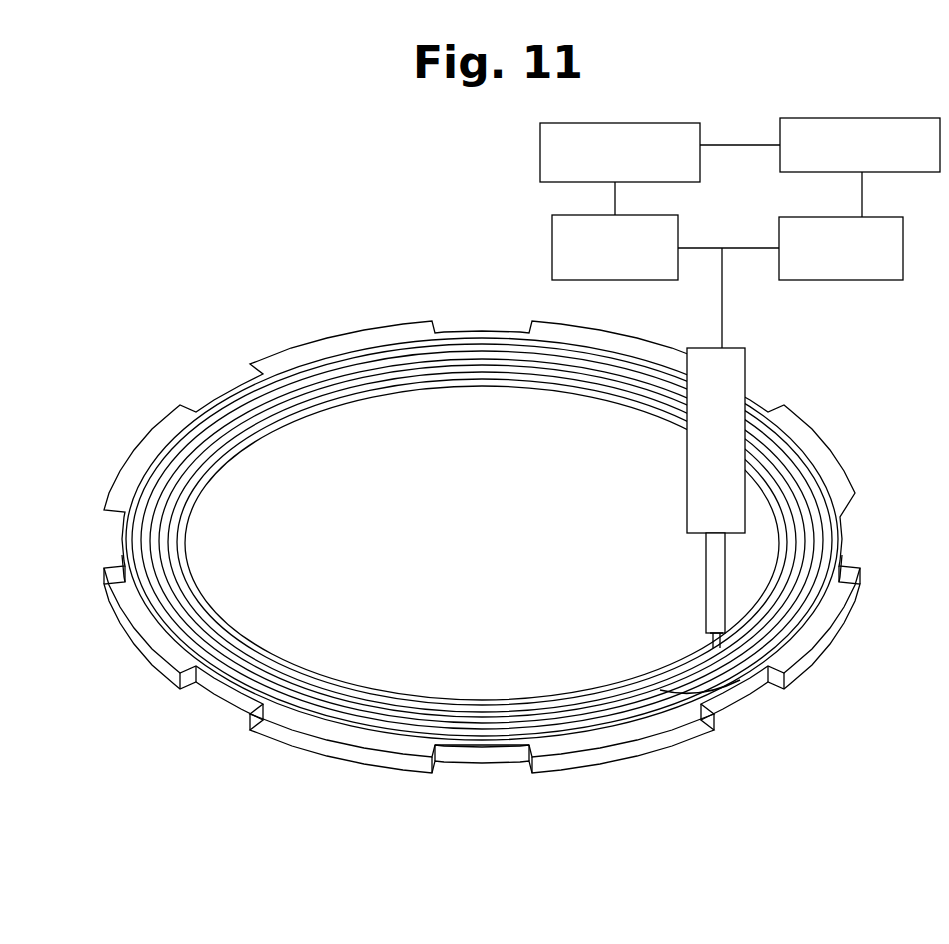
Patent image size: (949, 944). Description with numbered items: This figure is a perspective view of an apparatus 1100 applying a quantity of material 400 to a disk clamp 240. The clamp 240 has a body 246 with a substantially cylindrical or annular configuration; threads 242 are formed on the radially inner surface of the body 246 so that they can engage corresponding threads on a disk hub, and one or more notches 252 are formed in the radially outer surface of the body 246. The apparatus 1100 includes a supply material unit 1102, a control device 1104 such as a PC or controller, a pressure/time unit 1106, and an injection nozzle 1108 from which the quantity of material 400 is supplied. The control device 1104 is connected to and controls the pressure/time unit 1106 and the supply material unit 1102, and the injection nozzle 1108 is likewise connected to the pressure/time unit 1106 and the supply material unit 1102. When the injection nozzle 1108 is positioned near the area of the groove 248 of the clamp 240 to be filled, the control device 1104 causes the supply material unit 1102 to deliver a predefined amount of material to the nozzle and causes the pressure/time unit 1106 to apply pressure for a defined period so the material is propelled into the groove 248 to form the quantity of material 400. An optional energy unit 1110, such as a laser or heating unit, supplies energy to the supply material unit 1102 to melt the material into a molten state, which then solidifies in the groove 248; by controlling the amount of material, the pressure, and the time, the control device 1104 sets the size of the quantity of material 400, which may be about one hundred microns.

The disk clamp 240 is at (180, 712).
The threads 242 is at (195, 475).
The body 246 is at (612, 735).
The groove 248 is at (810, 497).
The notches 252 is at (460, 752).
The quantity of material 400 is at (710, 672).
The apparatus 1100 is at (686, 447).
The supply material unit 1102 is at (812, 280).
The control device 1104 is at (540, 155).
The pressure/time unit 1106 is at (552, 255).
The injection nozzle 1108 is at (707, 597).
The energy unit 1110 is at (852, 118).